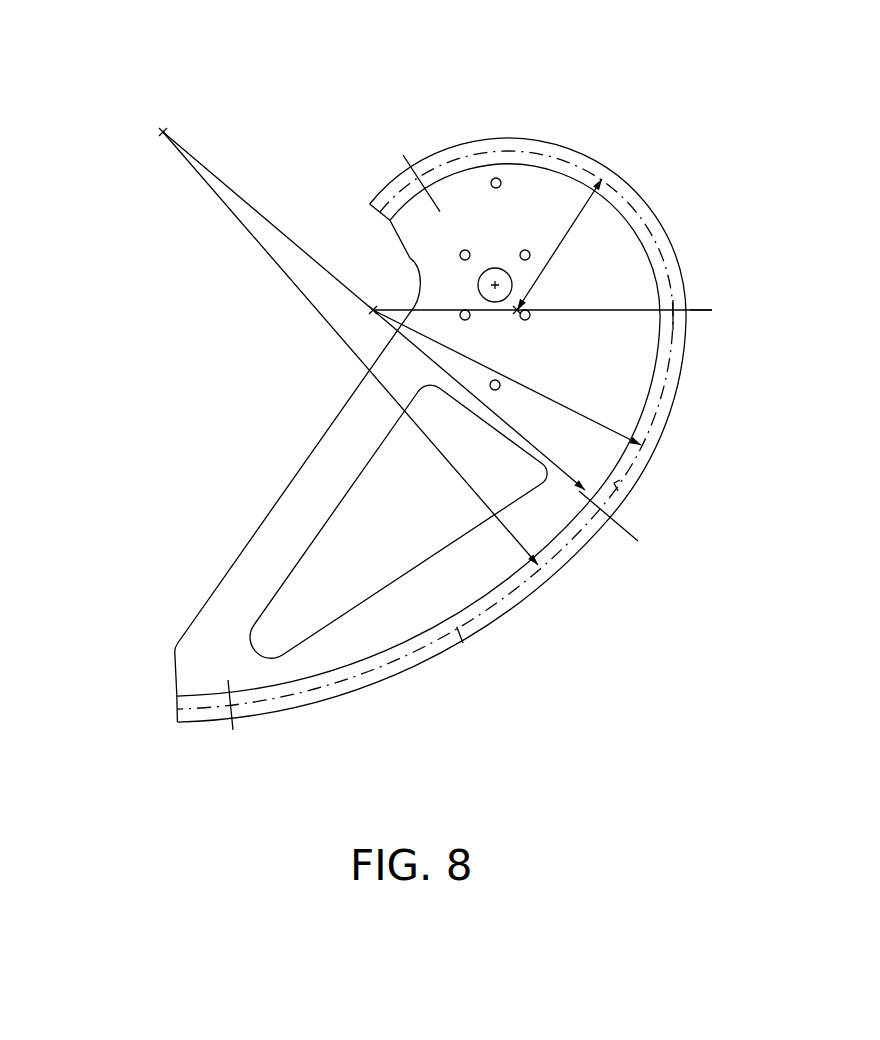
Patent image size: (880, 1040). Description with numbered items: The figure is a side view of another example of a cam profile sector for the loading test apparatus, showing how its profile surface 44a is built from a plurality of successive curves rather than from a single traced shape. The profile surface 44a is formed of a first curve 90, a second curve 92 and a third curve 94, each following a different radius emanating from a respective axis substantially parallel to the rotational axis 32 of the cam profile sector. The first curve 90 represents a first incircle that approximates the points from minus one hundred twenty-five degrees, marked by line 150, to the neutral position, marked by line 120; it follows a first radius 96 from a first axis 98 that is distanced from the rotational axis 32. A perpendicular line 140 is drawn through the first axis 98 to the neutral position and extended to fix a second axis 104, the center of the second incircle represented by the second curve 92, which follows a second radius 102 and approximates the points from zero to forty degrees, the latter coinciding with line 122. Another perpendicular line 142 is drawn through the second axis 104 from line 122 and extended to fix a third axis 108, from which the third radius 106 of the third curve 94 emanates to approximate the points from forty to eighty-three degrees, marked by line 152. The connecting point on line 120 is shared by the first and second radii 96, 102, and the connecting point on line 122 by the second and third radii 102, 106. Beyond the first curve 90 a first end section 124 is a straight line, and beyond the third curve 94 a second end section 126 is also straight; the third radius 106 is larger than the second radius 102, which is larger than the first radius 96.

The rotational axis 32 is at (495, 285).
The profile surface 44a is at (700, 320).
The first curve 90 is at (646, 213).
The second curve 92 is at (618, 487).
The third curve 94 is at (463, 643).
The first radius 96 is at (576, 222).
The first axis 98 is at (522, 307).
The second radius 102 is at (542, 395).
The second axis 104 is at (373, 310).
The third radius 106 is at (278, 268).
The third axis 108 is at (163, 132).
The neutral position line 120 is at (677, 311).
The forty degree position line 122 is at (620, 527).
The first end section 124 is at (380, 208).
The second end section 126 is at (204, 708).
The perpendicular line 140 is at (603, 312).
The perpendicular line 142 is at (527, 433).
The minus one hundred twenty-five degree line 150 is at (404, 156).
The eighty-three degree line 152 is at (234, 730).